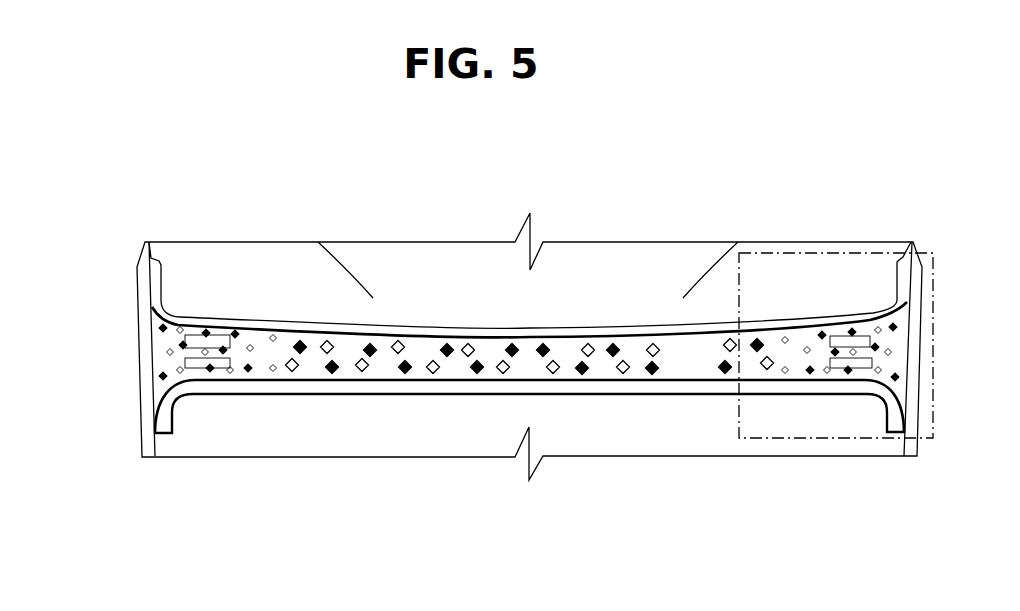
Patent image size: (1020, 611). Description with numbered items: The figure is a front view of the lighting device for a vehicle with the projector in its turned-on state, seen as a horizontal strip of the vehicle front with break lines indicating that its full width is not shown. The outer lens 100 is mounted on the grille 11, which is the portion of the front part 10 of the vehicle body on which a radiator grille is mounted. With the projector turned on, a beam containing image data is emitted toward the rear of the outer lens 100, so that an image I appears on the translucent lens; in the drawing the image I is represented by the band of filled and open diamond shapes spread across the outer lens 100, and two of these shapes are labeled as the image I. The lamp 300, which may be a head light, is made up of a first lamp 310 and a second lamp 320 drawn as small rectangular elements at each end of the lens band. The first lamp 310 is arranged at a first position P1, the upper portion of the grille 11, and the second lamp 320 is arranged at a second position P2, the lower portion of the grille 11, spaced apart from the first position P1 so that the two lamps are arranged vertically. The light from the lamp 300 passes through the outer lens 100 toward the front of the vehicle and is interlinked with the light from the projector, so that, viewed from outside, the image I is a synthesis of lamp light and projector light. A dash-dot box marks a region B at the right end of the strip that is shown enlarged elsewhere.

The front part 10 is at (433, 422).
The grille 11 is at (352, 384).
The outer lens 100 is at (600, 372).
The image I is at (543, 360).
The lamp 300 is at (528, 460).
The first lamp 310 is at (830, 340).
The second lamp 320 is at (833, 367).
The region B is at (740, 243).
The first position P1 is at (124, 338).
The second position P2 is at (124, 362).